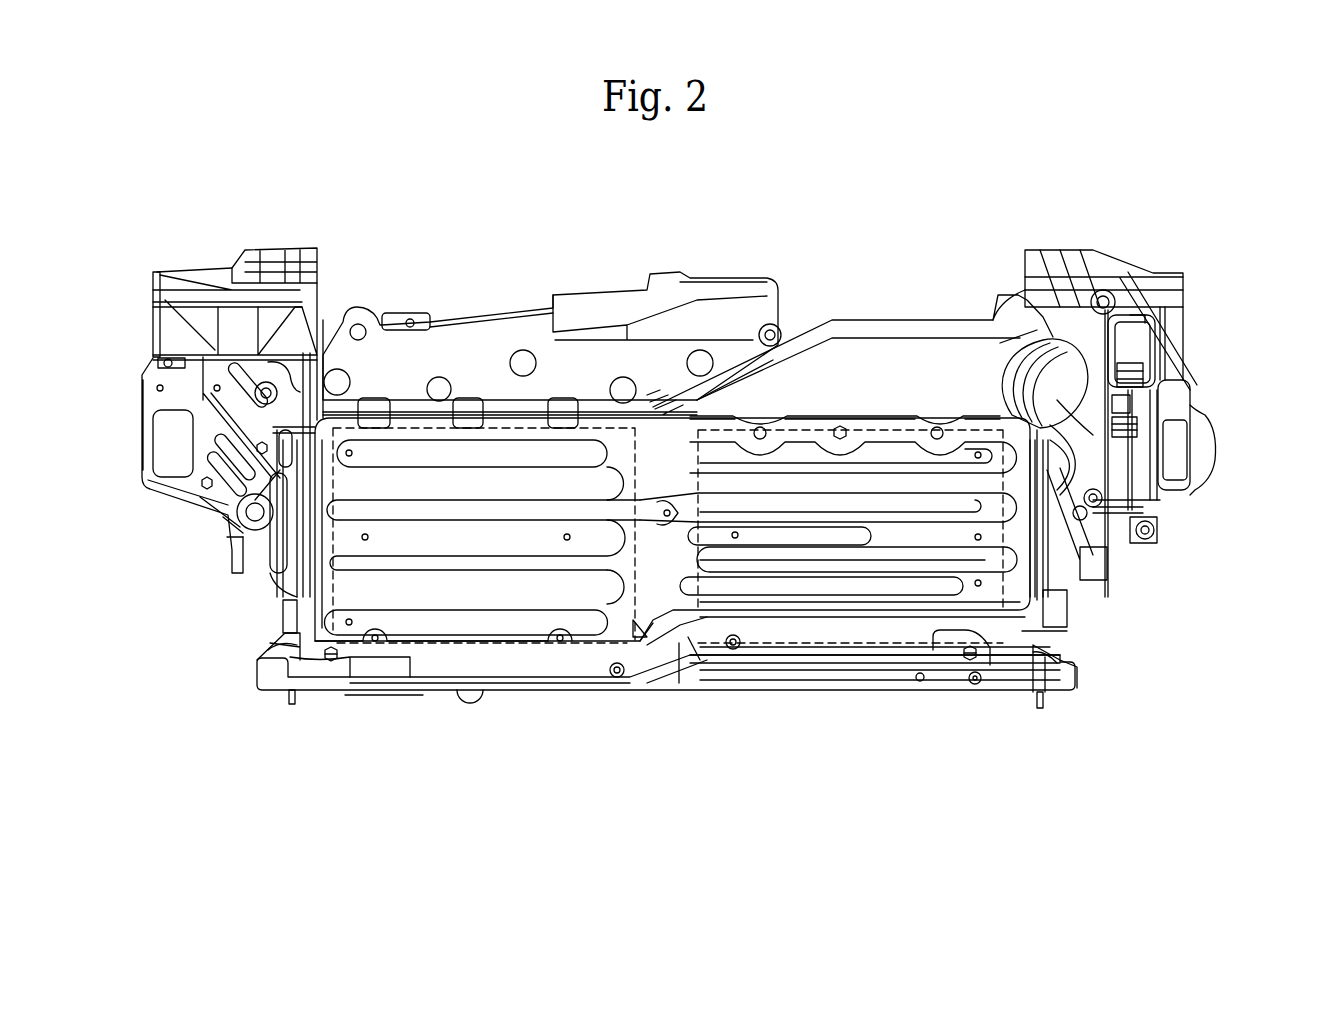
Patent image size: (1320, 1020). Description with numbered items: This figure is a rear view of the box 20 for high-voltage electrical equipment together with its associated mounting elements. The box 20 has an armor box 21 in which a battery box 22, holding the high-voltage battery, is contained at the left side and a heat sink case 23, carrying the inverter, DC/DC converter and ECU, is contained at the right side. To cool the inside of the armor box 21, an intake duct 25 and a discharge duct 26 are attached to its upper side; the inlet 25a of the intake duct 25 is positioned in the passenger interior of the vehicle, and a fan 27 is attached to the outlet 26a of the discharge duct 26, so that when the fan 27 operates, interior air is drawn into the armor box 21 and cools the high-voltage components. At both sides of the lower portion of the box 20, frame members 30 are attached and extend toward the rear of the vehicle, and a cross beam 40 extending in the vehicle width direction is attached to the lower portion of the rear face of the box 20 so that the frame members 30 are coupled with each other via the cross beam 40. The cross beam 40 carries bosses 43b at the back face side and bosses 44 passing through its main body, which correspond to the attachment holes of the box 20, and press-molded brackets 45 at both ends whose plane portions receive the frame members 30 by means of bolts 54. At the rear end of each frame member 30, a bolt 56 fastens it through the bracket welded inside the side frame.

The box for high-voltage electrical equipment 20 is at (838, 698).
The armor box 21 is at (432, 585).
The battery box 22 is at (653, 627).
The heat sink case 23 is at (688, 640).
The intake duct 25 is at (497, 308).
The inlet of the intake duct 25a is at (715, 262).
The discharge duct 26 is at (878, 313).
The outlet of the discharge duct 26a is at (1000, 320).
The fan 27 is at (1205, 408).
The frame member 30 is at (240, 683).
The cross beam 40 is at (520, 680).
The boss 43b is at (985, 685).
The boss 44 is at (733, 649).
The bracket 45 is at (970, 661).
The bolt 54 is at (1067, 632).
The bolt 56 is at (1057, 663).